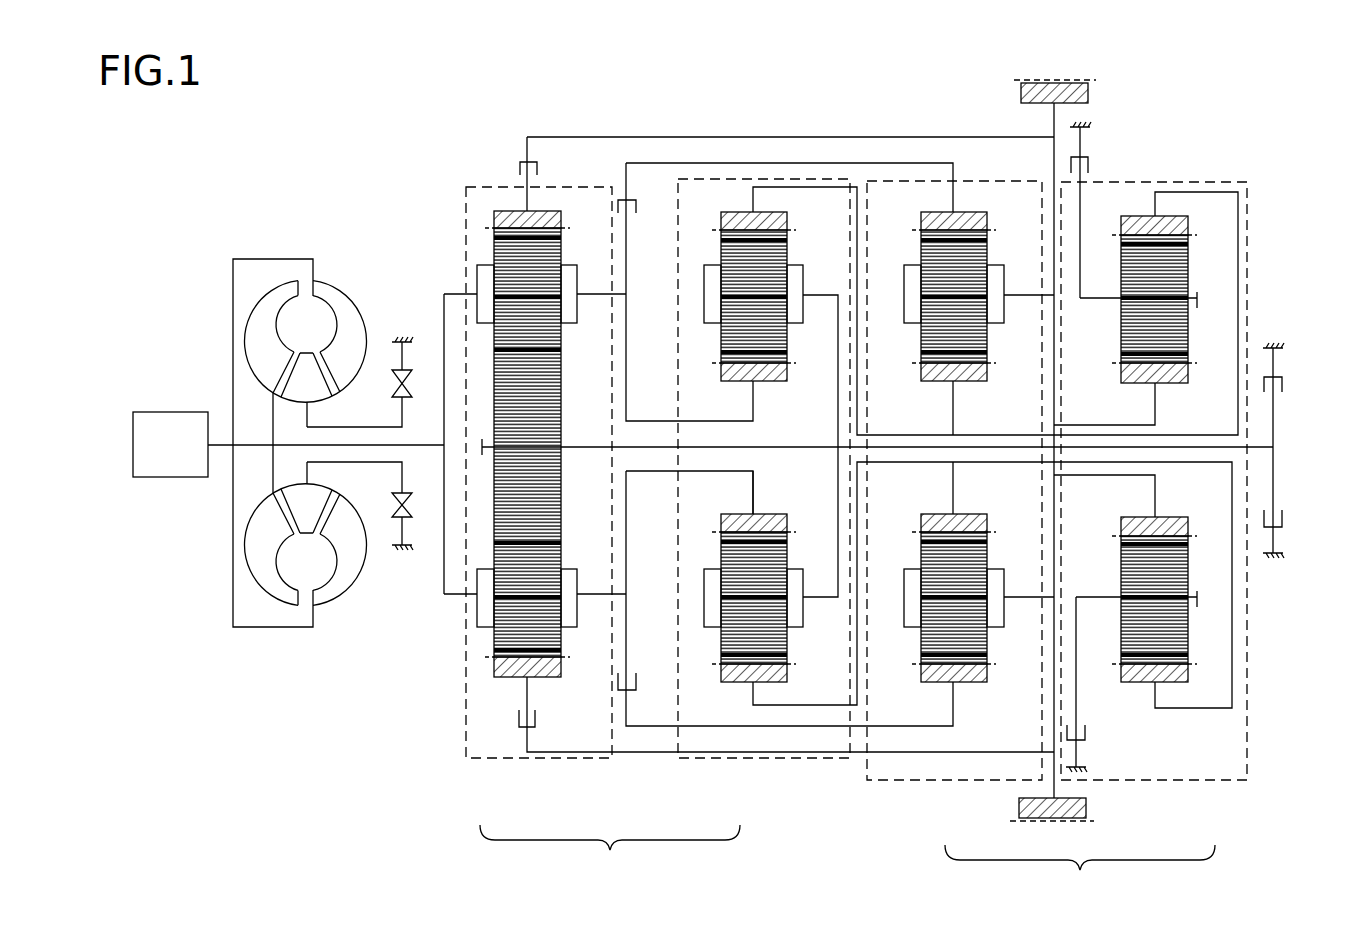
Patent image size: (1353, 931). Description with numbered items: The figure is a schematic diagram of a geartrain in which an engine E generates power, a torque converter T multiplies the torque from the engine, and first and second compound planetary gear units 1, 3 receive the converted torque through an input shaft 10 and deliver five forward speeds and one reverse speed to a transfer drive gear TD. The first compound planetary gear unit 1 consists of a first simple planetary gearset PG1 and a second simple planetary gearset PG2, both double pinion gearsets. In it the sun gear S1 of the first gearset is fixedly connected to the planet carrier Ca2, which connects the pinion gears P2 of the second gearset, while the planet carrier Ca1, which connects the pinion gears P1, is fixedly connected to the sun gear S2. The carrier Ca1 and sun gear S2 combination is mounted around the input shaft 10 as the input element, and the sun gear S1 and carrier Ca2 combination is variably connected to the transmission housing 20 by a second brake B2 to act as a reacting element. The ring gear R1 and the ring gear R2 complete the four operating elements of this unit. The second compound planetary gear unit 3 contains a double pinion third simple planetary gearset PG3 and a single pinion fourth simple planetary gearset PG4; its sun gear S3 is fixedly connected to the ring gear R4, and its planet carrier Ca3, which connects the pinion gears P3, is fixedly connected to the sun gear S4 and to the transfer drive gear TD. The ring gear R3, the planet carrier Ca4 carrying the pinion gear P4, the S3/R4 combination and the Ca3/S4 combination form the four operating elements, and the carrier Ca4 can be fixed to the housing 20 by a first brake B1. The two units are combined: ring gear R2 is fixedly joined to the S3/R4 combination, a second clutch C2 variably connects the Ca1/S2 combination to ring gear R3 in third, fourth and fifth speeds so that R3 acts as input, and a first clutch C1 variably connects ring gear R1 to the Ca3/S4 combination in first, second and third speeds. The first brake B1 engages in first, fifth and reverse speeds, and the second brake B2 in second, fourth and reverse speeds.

The engine E is at (170, 444).
The torque converter T is at (347, 280).
The transmission housing 20 is at (404, 340).
The input shaft 10 is at (420, 450).
The first clutch C1 is at (772, 174).
The second clutch C2 is at (785, 444).
The first brake B1 is at (1095, 449).
The second brake B2 is at (1291, 453).
The transfer drive gear TD is at (1063, 78).
The first simple planetary gearset PG1 is at (481, 760).
The second simple planetary gearset PG2 is at (752, 760).
The third simple planetary gearset PG3 is at (946, 782).
The fourth simple planetary gearset PG4 is at (1212, 782).
The ring gear R1 is at (556, 212).
The pinion gears P1 is at (547, 245).
The planet carrier Ca1 is at (577, 324).
The sun gear S1 is at (550, 480).
The ring gear R2 is at (784, 212).
The pinion gears P2 is at (788, 248).
The planet carrier Ca2 is at (803, 324).
The sun gear S2 is at (735, 382).
The ring gear R3 is at (984, 212).
The pinion gears P3 is at (988, 248).
The planet carrier Ca3 is at (1004, 324).
The sun gear S3 is at (937, 382).
The ring gear R4 is at (1126, 217).
The pinion gear P4 is at (1178, 268).
The planet carrier Ca4 is at (1096, 305).
The sun gear S4 is at (1133, 382).
The first compound planetary gear unit 1 is at (610, 851).
The second compound planetary gear unit 3 is at (1080, 872).